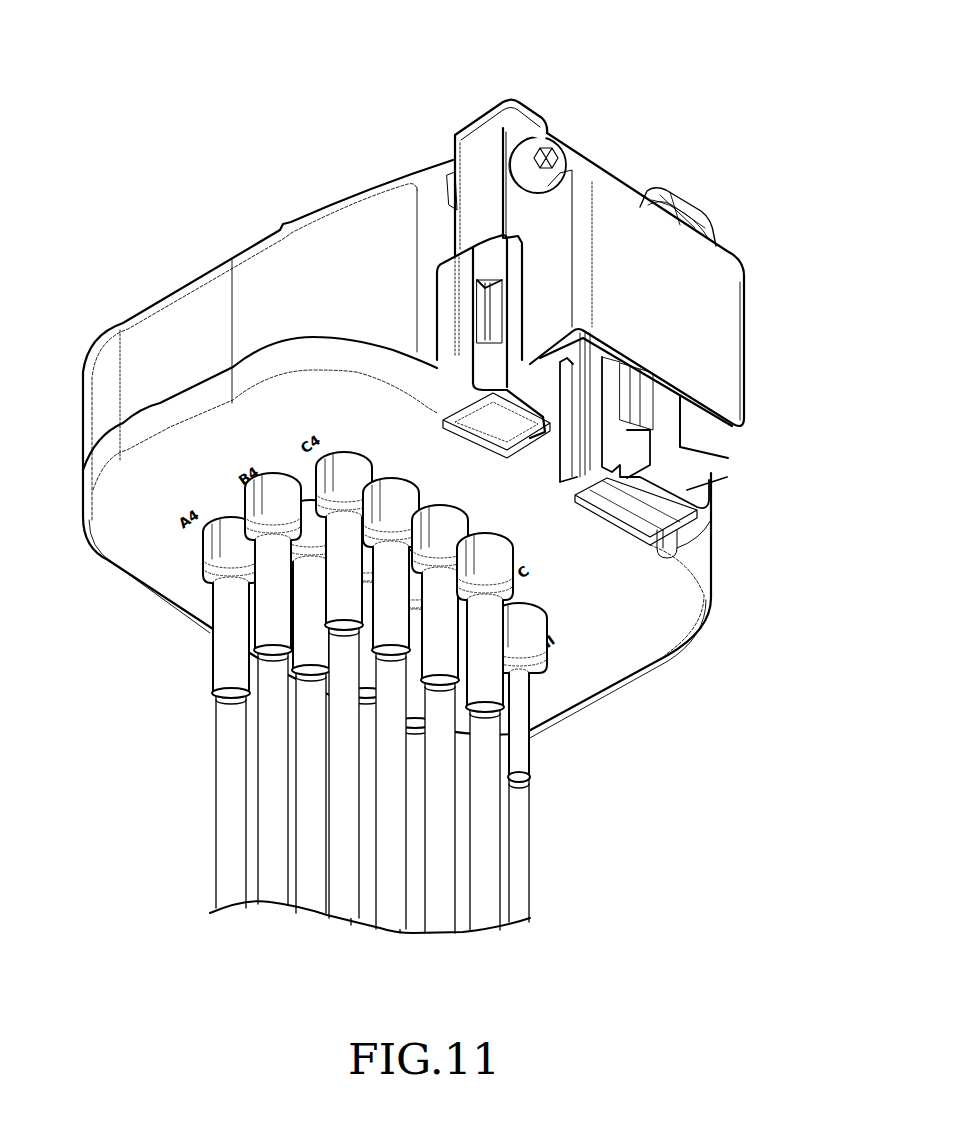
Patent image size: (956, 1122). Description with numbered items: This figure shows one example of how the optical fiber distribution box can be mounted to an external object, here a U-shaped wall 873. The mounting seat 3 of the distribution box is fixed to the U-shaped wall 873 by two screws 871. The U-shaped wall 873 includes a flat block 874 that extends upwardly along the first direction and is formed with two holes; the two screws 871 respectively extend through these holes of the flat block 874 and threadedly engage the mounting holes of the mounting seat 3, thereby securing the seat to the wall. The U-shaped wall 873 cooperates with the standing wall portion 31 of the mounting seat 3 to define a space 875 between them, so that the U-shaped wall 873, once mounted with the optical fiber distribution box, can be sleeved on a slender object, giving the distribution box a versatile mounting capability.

The mounting seat 3 is at (458, 112).
The standing wall portion 31 is at (585, 153).
The screw 871 is at (536, 138).
The U-shaped wall 873 is at (728, 316).
The flat block 874 is at (495, 110).
The space 875 is at (714, 432).